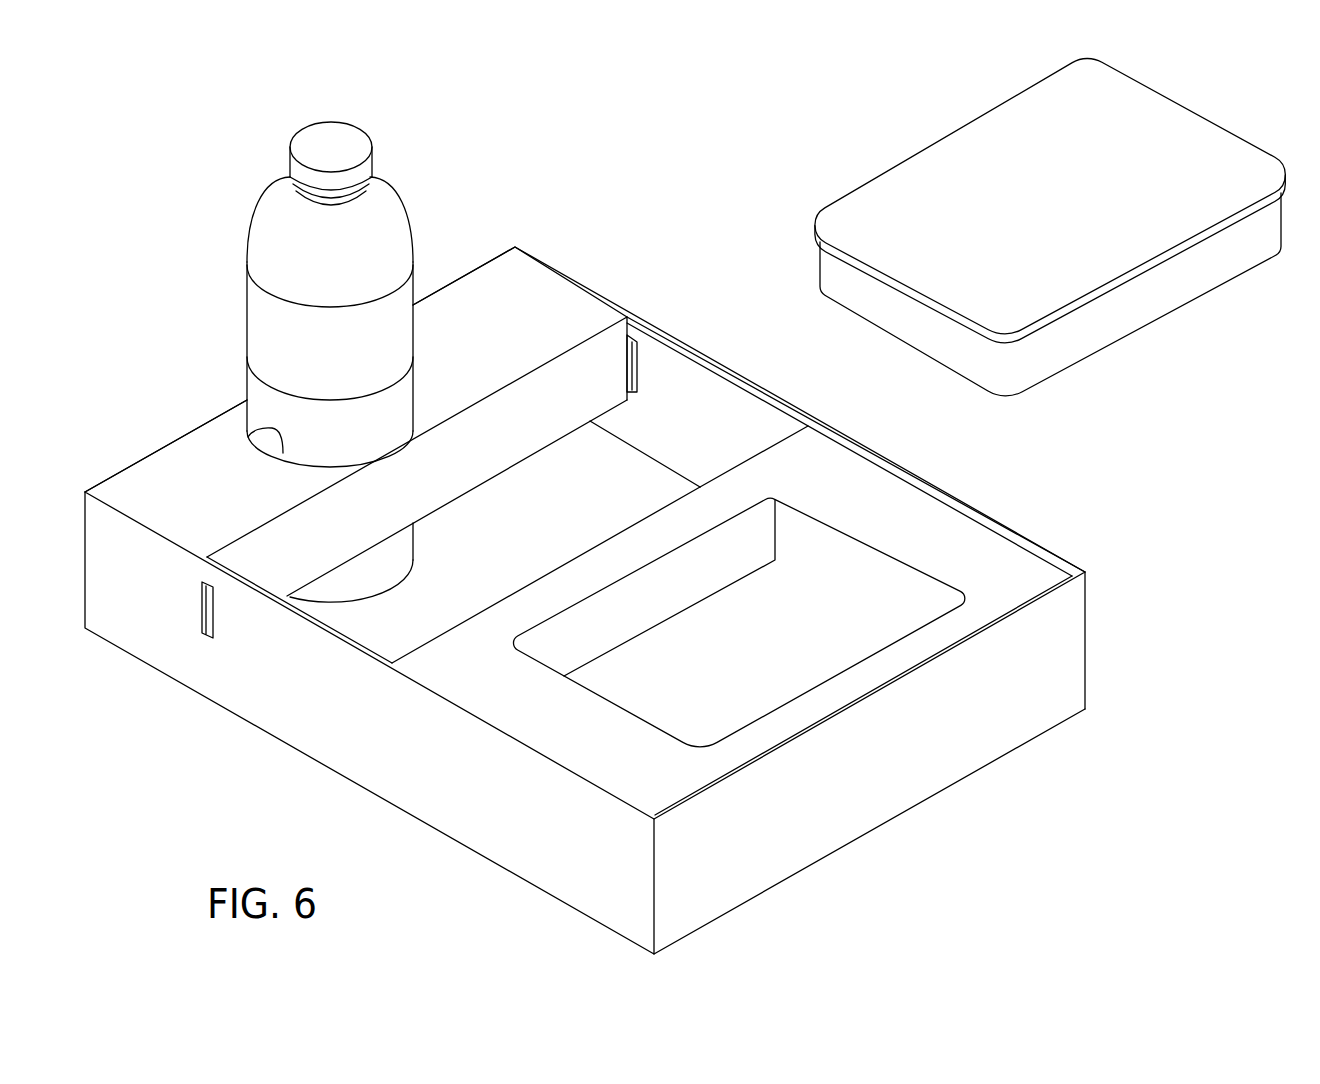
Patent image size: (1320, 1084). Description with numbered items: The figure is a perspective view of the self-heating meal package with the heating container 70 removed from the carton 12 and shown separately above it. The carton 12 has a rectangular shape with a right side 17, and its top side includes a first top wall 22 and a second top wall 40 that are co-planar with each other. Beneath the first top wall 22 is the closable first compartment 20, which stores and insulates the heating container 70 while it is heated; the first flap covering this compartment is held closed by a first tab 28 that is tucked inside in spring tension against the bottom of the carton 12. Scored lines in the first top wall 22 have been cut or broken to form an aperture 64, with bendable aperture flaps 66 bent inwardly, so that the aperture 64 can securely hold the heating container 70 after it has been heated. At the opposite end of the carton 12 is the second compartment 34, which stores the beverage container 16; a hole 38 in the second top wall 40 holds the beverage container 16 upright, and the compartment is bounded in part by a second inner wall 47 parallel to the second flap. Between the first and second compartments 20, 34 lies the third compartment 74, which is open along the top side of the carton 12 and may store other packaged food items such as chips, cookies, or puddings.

The carton 12 is at (575, 885).
The beverage container 16 is at (384, 203).
The right side 17 is at (1065, 698).
The first compartment 20 is at (693, 807).
The first top wall 22 is at (840, 448).
The first tab 28 is at (910, 777).
The second compartment 34 is at (466, 506).
The hole 38 is at (247, 438).
The second top wall 40 is at (538, 279).
The second inner wall 47 is at (603, 398).
The aperture 64 is at (867, 549).
The aperture flaps 66 is at (780, 498).
The heating container 70 is at (1180, 116).
The third compartment 74 is at (731, 406).